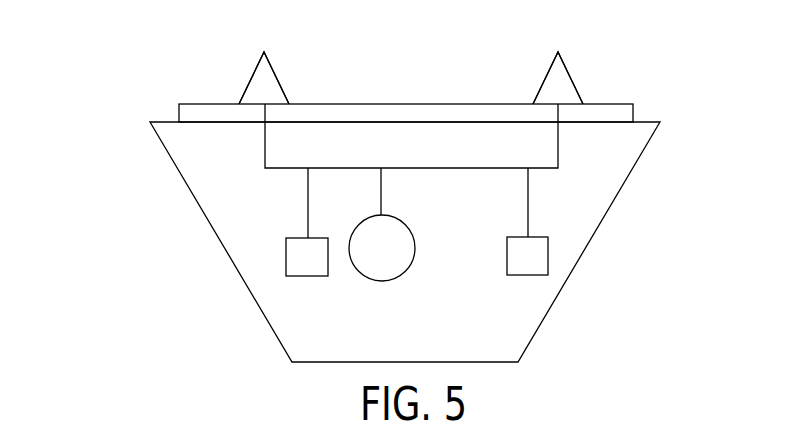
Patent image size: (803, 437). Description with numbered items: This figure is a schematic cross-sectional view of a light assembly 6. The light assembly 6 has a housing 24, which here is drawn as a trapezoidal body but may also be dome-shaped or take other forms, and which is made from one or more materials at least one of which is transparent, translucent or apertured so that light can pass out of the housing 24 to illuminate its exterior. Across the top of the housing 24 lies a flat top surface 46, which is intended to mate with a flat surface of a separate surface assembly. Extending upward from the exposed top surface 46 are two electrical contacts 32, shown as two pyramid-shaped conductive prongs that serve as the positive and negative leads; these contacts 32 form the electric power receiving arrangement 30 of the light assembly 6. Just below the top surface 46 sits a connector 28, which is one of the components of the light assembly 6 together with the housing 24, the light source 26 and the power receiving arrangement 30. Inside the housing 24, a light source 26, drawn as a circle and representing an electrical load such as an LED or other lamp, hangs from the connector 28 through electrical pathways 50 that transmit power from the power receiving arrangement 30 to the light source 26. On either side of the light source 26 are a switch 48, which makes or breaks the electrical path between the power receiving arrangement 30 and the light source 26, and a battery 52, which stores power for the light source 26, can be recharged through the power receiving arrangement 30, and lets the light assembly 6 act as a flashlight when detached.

The light assembly 6 is at (97, 168).
The housing 24 is at (569, 275).
The light source 26 is at (407, 257).
The connector 28 is at (605, 104).
The electric power receiving arrangement 30 is at (543, 78).
The electrical contacts 32 is at (411, 78).
The top surface 46 is at (163, 117).
The switch 48 is at (295, 254).
The electrical pathways 50 is at (383, 192).
The battery 52 is at (537, 260).